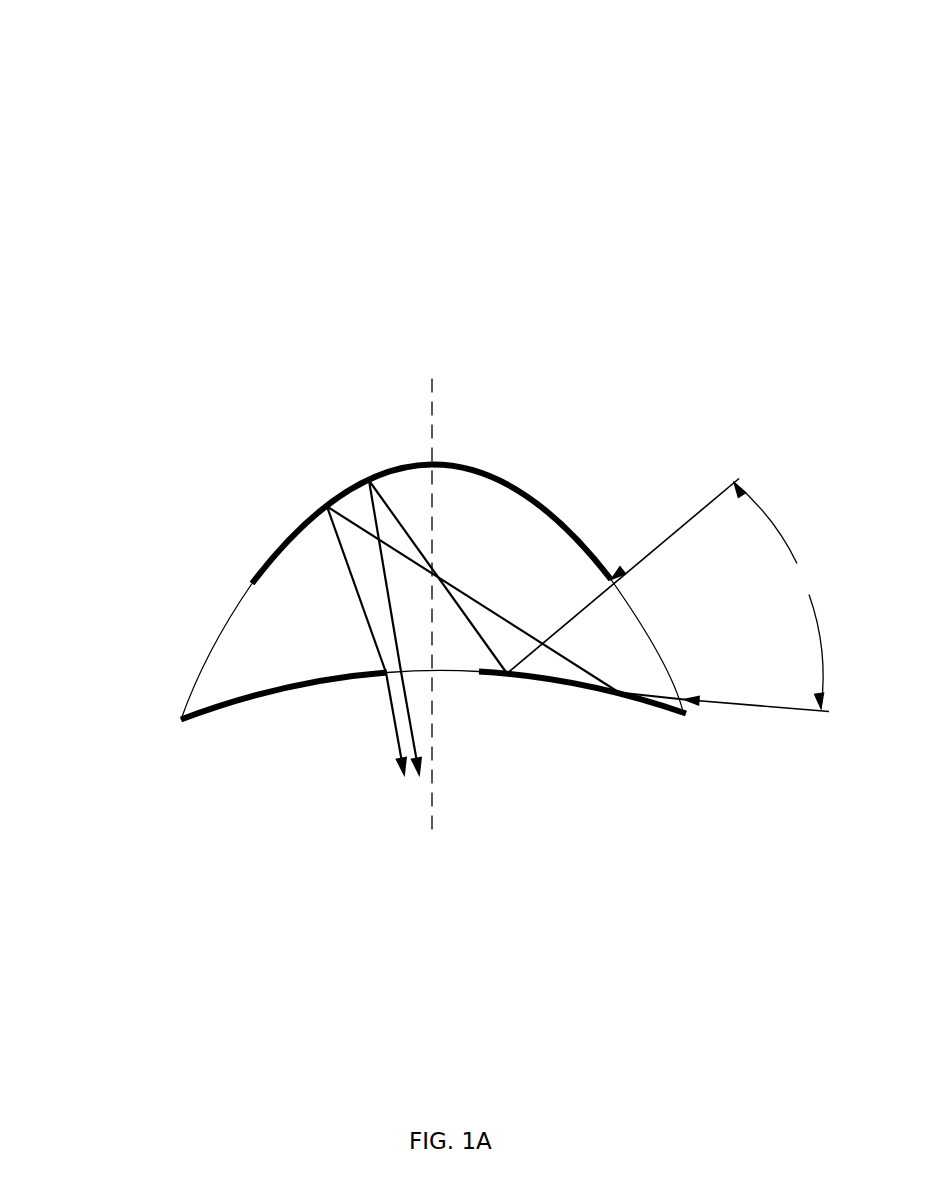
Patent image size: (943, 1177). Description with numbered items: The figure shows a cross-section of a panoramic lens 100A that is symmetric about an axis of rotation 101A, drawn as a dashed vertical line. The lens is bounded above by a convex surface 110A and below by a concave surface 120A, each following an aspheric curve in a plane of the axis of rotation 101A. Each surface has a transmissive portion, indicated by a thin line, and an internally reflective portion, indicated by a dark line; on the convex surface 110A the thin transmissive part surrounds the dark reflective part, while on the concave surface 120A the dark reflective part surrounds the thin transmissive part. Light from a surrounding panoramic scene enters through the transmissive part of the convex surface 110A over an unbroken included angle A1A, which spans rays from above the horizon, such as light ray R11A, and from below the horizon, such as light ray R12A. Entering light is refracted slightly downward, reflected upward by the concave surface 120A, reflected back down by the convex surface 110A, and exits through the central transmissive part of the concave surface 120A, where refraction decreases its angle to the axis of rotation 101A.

The panoramic lens 100A is at (148, 118).
The convex surface 110A is at (682, 332).
The axis of rotation 101A is at (430, 423).
The concave surface 120A is at (685, 843).
The light ray R11A is at (683, 518).
The light ray R12A is at (737, 703).
The included angle A1A is at (780, 596).